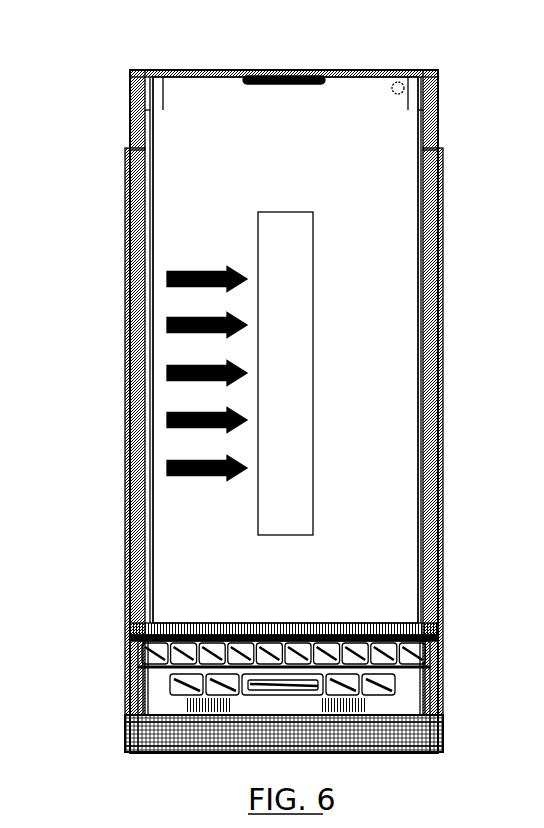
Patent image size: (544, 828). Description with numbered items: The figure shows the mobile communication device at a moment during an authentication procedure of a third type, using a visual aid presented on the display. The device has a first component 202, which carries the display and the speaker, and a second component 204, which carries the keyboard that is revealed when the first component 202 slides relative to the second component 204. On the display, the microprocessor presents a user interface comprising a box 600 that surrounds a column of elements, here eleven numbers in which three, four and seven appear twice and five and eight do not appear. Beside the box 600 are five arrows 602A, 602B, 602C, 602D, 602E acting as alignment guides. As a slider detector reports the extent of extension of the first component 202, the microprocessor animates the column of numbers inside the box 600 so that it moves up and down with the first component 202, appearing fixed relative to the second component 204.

The first component 202 is at (438, 78).
The second component 204 is at (436, 752).
The box 600 is at (313, 267).
The arrow 602A is at (167, 279).
The arrow 602B is at (167, 325).
The arrow 602C is at (167, 373).
The arrow 602D is at (167, 420).
The arrow 602E is at (167, 468).